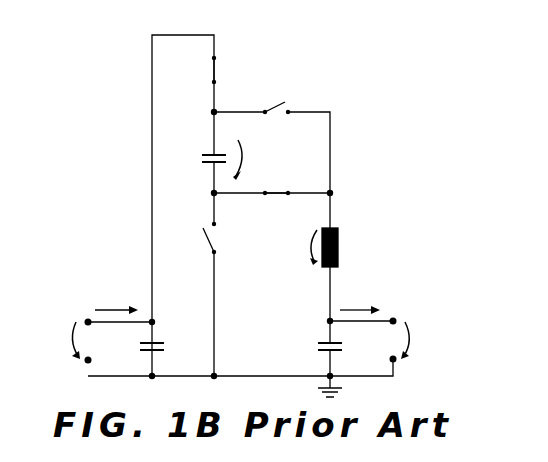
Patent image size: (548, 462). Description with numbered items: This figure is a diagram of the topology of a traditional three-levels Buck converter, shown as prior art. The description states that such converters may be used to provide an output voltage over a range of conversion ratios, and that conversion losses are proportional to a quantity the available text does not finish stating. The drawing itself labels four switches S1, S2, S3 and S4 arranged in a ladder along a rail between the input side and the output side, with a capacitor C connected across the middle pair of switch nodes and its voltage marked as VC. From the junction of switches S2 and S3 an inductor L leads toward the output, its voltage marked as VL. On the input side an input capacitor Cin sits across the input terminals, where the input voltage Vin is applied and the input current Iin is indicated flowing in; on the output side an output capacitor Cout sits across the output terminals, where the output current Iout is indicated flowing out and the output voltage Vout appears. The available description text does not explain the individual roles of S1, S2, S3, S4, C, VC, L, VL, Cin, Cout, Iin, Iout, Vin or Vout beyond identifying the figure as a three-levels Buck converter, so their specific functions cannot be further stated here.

The switch S1 is at (201, 70).
The switch S2 is at (276, 100).
The switch S3 is at (276, 203).
The switch S4 is at (200, 238).
The flying capacitor C is at (208, 154).
The capacitor voltage VC is at (248, 160).
The inductor L is at (337, 247).
The inductor voltage VL is at (303, 247).
The input capacitor Cin is at (137, 343).
The output capacitor Cout is at (312, 343).
The input current Iin is at (116, 302).
The output current Iout is at (360, 302).
The input voltage Vin is at (61, 340).
The output voltage Vout is at (421, 340).